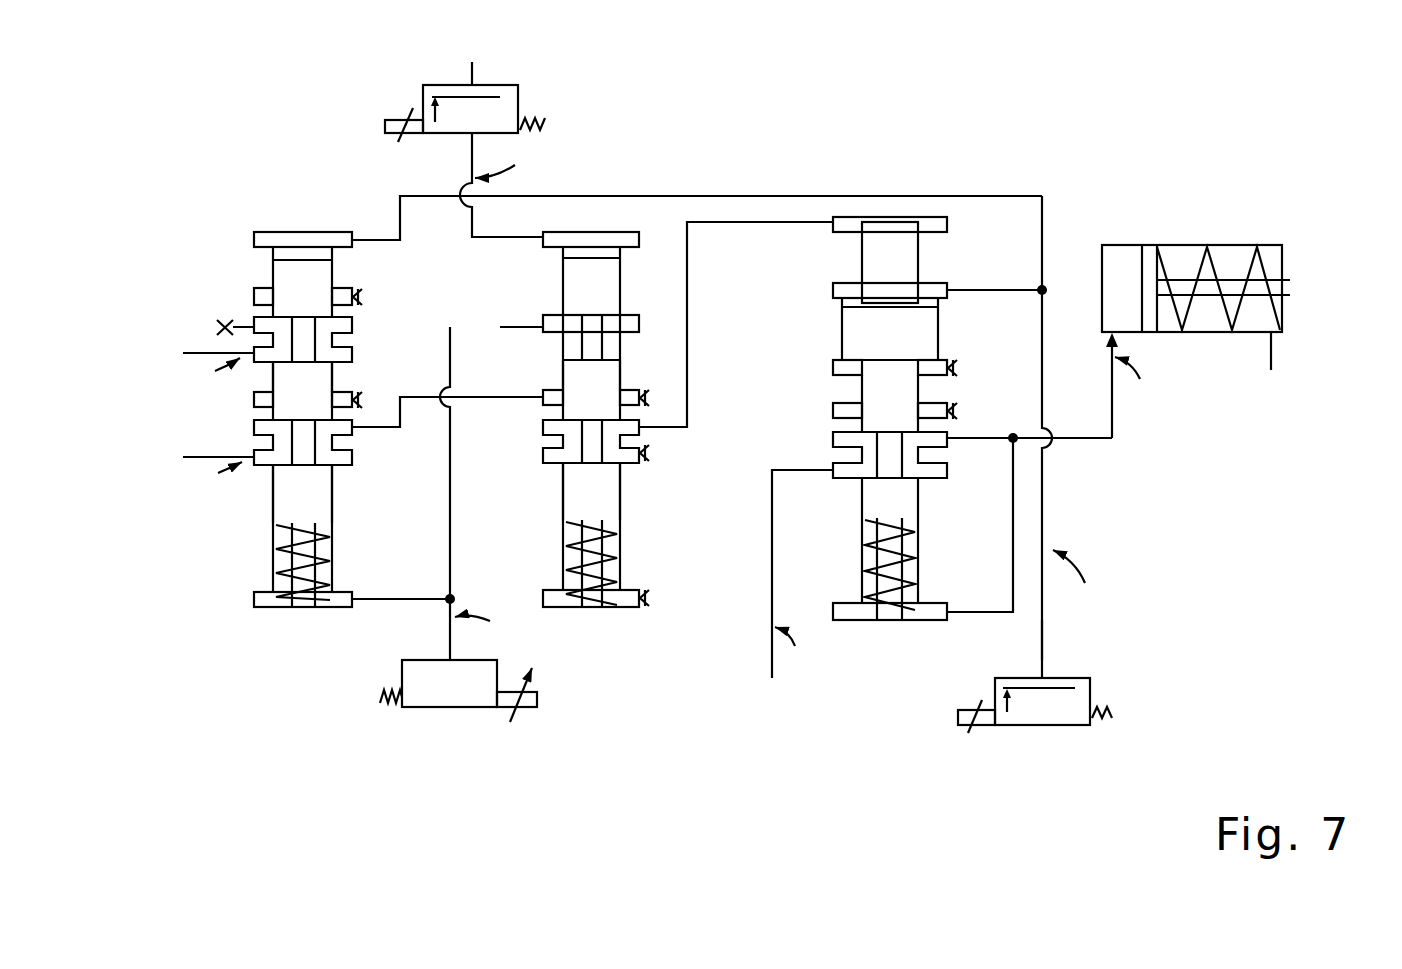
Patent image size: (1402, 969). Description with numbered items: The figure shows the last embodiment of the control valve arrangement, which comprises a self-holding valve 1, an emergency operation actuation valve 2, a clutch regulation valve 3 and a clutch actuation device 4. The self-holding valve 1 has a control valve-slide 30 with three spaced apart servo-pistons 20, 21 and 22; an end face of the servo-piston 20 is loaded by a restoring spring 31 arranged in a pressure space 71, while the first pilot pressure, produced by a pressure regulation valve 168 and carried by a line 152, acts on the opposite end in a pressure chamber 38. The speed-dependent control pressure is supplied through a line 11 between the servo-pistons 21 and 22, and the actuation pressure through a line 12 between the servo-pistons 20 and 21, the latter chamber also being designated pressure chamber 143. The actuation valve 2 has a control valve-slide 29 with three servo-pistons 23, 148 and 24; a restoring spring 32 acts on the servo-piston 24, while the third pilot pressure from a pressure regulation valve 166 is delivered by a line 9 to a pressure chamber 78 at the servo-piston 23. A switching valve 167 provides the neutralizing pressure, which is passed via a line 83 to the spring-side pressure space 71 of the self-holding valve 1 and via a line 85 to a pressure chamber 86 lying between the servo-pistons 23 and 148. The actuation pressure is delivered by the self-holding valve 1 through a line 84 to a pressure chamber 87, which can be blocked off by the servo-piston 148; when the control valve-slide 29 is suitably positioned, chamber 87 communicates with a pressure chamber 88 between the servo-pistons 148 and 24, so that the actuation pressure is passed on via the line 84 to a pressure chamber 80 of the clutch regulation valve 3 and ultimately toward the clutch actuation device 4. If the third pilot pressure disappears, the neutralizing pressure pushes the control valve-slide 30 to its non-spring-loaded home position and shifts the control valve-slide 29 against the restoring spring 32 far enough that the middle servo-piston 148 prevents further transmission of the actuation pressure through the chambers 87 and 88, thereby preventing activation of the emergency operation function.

The self-holding valve 1 is at (222, 638).
The emergency operation actuation valve 2 is at (577, 628).
The clutch regulation valve 3 is at (888, 635).
The clutch actuation device 4 is at (1298, 288).
The line 9 is at (555, 427).
The line 11 is at (200, 353).
The line 12 is at (200, 453).
The servo-piston 20 is at (285, 480).
The servo-piston 21 is at (312, 393).
The servo-piston 22 is at (295, 275).
The servo-piston 23 is at (580, 247).
The servo-piston 24 is at (607, 495).
The control valve-slide 29 is at (552, 480).
The control valve-slide 30 is at (347, 492).
The restoring spring 31 is at (275, 540).
The restoring spring 32 is at (603, 603).
The pressure chamber 38 is at (252, 238).
The pressure space 71 is at (265, 598).
The pressure chamber 78 is at (588, 280).
The pressure chamber 80 is at (848, 222).
The line 83 is at (380, 600).
The line 84 is at (373, 240).
The line 85 is at (447, 630).
The pressure chamber 86 is at (630, 320).
The pressure chamber 87 is at (630, 397).
The pressure chamber 88 is at (422, 395).
The pressure chamber 143 is at (252, 428).
The servo-piston 148 is at (600, 390).
The line 152 is at (1040, 630).
The pressure regulation valve 166 is at (442, 85).
The switching valve 167 is at (448, 683).
The pressure regulation valve 168 is at (1006, 726).